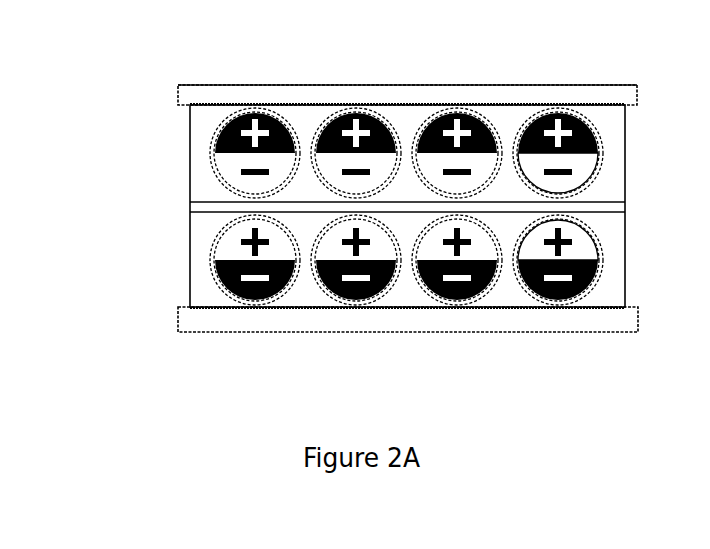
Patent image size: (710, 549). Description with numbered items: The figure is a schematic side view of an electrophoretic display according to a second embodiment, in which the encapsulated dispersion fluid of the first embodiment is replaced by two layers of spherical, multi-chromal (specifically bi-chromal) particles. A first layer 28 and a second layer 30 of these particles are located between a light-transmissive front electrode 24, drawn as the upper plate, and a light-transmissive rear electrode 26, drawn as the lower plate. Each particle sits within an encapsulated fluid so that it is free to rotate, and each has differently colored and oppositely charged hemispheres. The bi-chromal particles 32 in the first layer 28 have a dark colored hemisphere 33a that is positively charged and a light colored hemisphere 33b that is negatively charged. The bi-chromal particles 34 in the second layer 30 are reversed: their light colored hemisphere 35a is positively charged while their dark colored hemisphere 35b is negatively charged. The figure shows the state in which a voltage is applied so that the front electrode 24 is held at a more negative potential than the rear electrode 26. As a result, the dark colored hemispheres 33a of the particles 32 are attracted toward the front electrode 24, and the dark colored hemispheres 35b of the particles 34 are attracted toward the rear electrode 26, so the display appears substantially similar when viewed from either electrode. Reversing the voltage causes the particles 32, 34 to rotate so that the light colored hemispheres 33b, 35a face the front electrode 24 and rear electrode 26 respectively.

The light-transmissive front electrode 24 is at (178, 93).
The light-transmissive rear electrode 26 is at (178, 317).
The first layer 28 is at (190, 167).
The second layer 30 is at (190, 260).
The bi-chromal particles 32 is at (607, 151).
The dark colored hemisphere 33a is at (600, 134).
The light colored hemisphere 33b is at (598, 168).
The bi-chromal particles 34 is at (605, 258).
The light colored hemisphere 35a is at (597, 243).
The dark colored hemisphere 35b is at (598, 280).